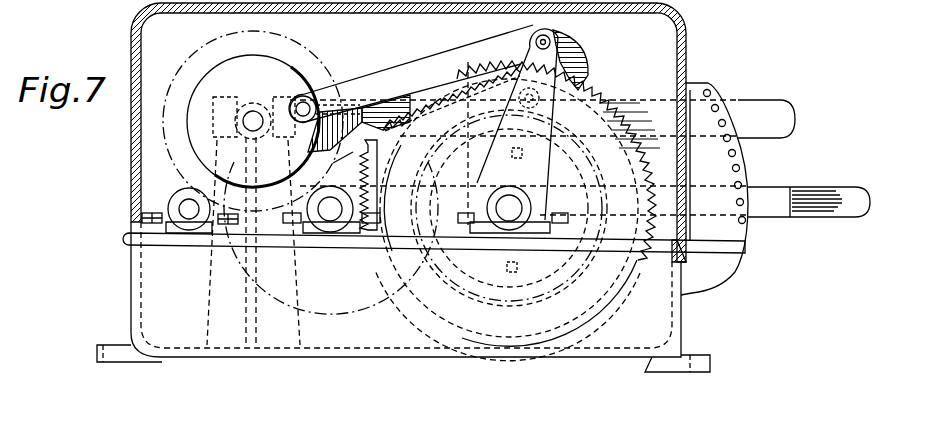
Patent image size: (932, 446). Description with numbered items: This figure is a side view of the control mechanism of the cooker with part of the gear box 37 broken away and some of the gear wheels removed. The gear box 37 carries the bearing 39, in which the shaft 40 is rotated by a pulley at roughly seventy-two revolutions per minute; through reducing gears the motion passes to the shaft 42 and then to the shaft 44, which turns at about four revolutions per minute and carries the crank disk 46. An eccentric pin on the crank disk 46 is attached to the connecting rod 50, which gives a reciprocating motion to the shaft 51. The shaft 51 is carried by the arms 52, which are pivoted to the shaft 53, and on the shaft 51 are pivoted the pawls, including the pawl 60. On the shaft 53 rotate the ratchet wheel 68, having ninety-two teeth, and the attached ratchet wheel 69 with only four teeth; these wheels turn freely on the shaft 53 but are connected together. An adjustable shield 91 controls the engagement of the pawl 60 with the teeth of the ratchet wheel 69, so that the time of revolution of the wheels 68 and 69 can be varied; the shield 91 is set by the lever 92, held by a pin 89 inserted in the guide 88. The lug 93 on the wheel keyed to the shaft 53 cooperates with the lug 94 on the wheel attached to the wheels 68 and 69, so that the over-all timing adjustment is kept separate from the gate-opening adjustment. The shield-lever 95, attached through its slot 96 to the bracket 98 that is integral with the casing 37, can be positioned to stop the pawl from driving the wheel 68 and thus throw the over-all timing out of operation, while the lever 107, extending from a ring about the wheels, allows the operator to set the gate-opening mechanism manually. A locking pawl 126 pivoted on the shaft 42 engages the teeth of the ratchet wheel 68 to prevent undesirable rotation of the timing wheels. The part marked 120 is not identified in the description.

The gear box 37 is at (145, 297).
The bearing 39 is at (142, 205).
The shaft 40 is at (188, 216).
The shaft 42 is at (330, 215).
The shaft 44 is at (258, 116).
The crank disk 46 is at (254, 64).
The connecting rod 50 is at (411, 78).
The shaft 51 is at (553, 39).
The arms 52 is at (517, 124).
The shaft 53 is at (505, 216).
The pawl 60 is at (590, 78).
The ratchet wheel 68 is at (598, 92).
The ratchet wheel 69 is at (590, 120).
The guide 88 is at (714, 189).
The pin 89 is at (744, 224).
The adjustable shield 91 is at (482, 67).
The lever 92 is at (780, 210).
The lug 93 is at (513, 197).
The lug 94 is at (510, 300).
The shield-lever 95 is at (786, 114).
The slot 96 is at (313, 106).
The bracket 98 is at (359, 123).
The lever 107 is at (852, 201).
The rack bar 120 is at (378, 163).
The locking pawl 126 is at (328, 165).